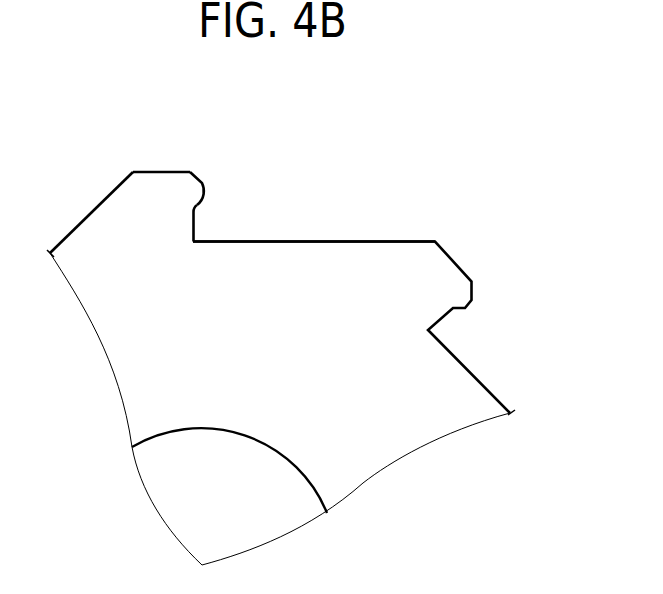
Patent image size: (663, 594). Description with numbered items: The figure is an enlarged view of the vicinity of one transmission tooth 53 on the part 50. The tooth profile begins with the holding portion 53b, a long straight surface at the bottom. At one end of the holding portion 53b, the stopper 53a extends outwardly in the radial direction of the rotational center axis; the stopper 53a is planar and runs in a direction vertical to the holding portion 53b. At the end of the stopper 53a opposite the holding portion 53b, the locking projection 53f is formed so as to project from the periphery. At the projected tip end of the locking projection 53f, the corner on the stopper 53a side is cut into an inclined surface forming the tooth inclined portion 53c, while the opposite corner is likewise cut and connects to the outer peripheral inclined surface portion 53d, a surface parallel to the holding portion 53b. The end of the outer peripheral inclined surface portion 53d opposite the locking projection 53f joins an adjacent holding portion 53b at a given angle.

The rail member 50 is at (281, 331).
The transmission tooth 53 is at (208, 212).
The stopper 53a is at (180, 240).
The holding portion 53b is at (285, 248).
The tooth inclined portion 53c is at (203, 205).
The outer peripheral inclined surface portion 53d is at (150, 172).
The locking projection 53f is at (201, 180).